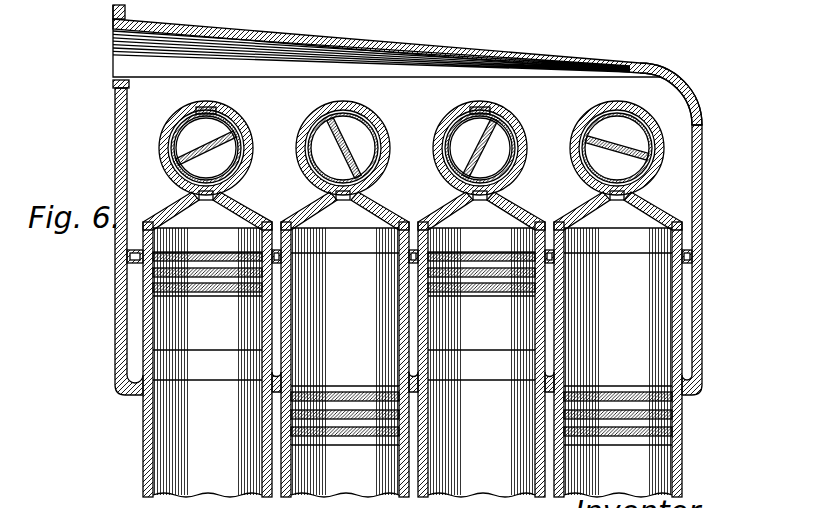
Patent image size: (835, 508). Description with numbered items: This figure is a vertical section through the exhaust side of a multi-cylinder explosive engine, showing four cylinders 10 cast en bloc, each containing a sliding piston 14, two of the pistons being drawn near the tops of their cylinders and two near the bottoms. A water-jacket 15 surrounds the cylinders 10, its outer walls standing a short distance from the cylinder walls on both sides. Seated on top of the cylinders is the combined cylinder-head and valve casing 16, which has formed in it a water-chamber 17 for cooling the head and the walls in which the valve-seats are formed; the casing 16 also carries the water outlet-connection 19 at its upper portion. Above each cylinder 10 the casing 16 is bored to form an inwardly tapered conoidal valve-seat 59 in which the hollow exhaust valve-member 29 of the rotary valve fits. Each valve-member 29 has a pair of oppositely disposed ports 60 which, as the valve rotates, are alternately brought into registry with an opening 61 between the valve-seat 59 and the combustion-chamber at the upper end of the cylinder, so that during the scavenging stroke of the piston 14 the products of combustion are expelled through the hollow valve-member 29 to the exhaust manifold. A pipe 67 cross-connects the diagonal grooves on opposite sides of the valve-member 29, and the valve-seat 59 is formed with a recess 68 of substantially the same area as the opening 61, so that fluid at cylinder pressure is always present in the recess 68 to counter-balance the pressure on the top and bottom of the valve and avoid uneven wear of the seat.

The cylinders 10 is at (412, 344).
The sliding pistons 14 is at (412, 366).
The water-jacket 15 is at (130, 336).
The combined cylinder-head and valve casing 16 is at (692, 104).
The water-chamber 17 is at (680, 175).
The outlet-connection 19 is at (119, 58).
The exhaust valve-member 29 is at (364, 110).
The valve-seat 59 is at (294, 150).
The ports 60 is at (212, 167).
The opening 61 is at (205, 199).
The pipe 67 is at (233, 129).
The recess 68 is at (209, 108).